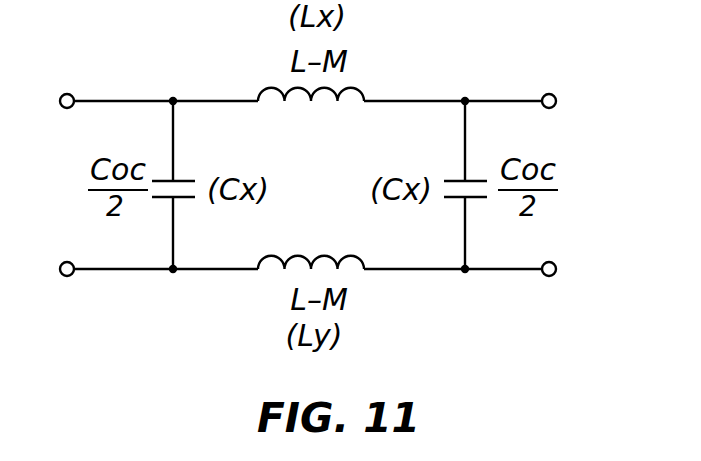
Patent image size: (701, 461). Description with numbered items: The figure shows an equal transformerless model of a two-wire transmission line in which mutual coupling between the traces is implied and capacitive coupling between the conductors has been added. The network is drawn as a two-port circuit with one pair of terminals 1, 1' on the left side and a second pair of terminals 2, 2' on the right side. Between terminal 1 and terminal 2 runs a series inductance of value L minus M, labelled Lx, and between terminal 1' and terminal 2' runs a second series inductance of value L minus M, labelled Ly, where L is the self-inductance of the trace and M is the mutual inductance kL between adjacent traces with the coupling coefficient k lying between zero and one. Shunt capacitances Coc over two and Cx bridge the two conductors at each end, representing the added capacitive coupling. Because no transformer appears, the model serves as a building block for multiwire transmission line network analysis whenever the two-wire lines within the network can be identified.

The input terminal 1 is at (52, 86).
The input terminal (return) 1' is at (52, 252).
The output terminal 2 is at (567, 101).
The output terminal (return) 2' is at (573, 264).